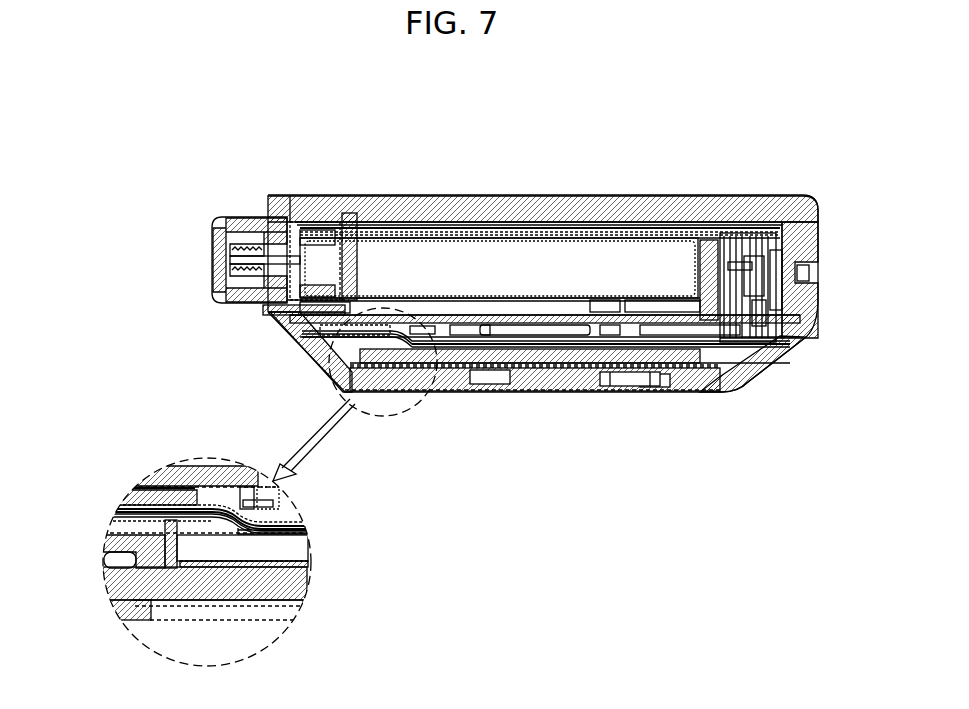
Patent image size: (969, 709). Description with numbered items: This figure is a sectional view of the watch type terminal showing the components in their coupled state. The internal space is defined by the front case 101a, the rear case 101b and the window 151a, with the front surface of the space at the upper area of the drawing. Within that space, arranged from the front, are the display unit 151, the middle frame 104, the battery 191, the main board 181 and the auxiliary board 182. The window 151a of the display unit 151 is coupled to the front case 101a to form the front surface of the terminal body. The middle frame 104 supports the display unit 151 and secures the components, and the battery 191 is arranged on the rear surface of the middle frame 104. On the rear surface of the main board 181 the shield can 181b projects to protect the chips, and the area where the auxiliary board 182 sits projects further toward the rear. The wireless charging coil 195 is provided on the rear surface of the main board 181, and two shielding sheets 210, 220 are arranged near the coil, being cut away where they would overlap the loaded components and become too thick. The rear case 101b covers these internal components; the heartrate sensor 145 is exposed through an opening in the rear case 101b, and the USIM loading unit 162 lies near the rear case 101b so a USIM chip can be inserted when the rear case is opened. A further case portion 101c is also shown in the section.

The front case 101a is at (812, 228).
The rear case 101b is at (287, 348).
The battery cover 101c is at (418, 377).
The middle frame 104 is at (353, 257).
The heartrate sensor 145 is at (618, 387).
The display unit 151 is at (455, 222).
The window 151a is at (668, 206).
The USIM loading unit 162 is at (485, 387).
The main board 181 is at (552, 323).
The shield can 181b is at (565, 318).
The auxiliary board 182 is at (500, 332).
The battery 191 is at (387, 245).
The wireless charging coil 195 is at (310, 363).
The shielding sheet 210 is at (343, 323).
The shielding sheet 220 is at (532, 387).